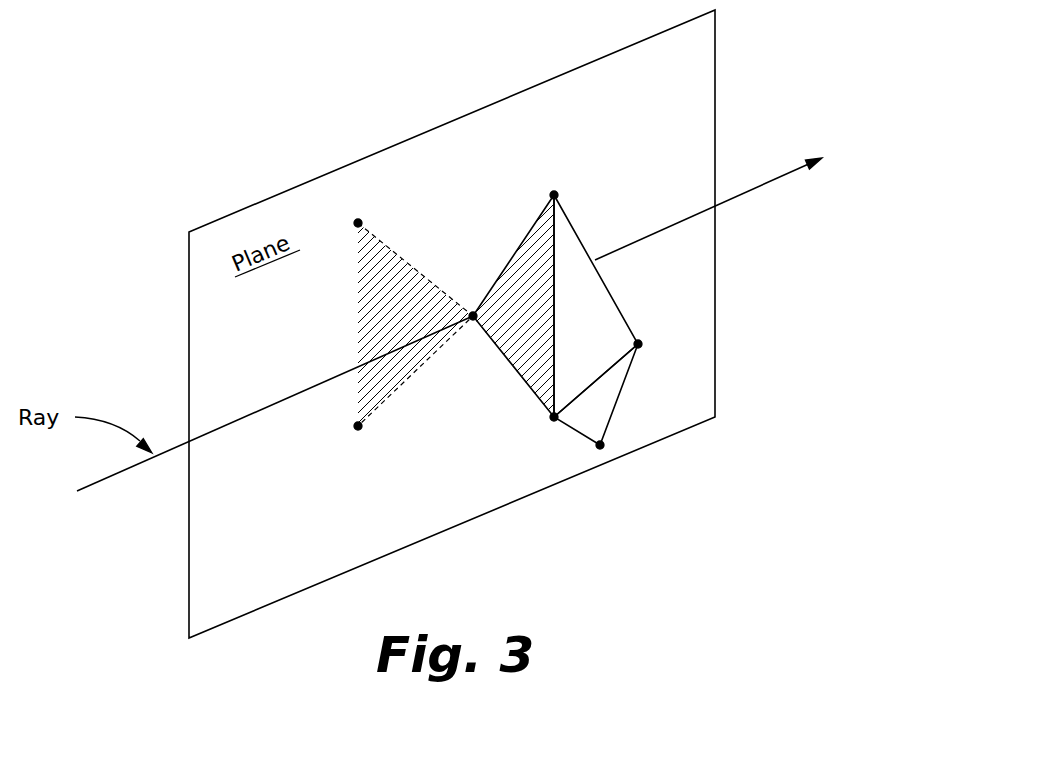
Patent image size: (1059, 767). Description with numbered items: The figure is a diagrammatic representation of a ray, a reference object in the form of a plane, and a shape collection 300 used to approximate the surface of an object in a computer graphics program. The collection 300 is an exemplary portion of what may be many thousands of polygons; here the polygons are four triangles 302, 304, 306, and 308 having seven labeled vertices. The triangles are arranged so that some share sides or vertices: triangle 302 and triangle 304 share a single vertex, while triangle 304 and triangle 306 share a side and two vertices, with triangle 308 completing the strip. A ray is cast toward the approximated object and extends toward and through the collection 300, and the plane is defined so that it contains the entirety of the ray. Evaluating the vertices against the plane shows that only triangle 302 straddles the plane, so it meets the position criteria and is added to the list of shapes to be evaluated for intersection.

The collection of shapes 300 is at (609, 178).
The triangle 302 is at (378, 242).
The triangle 304 is at (518, 380).
The triangle 306 is at (562, 245).
The triangle 308 is at (602, 408).